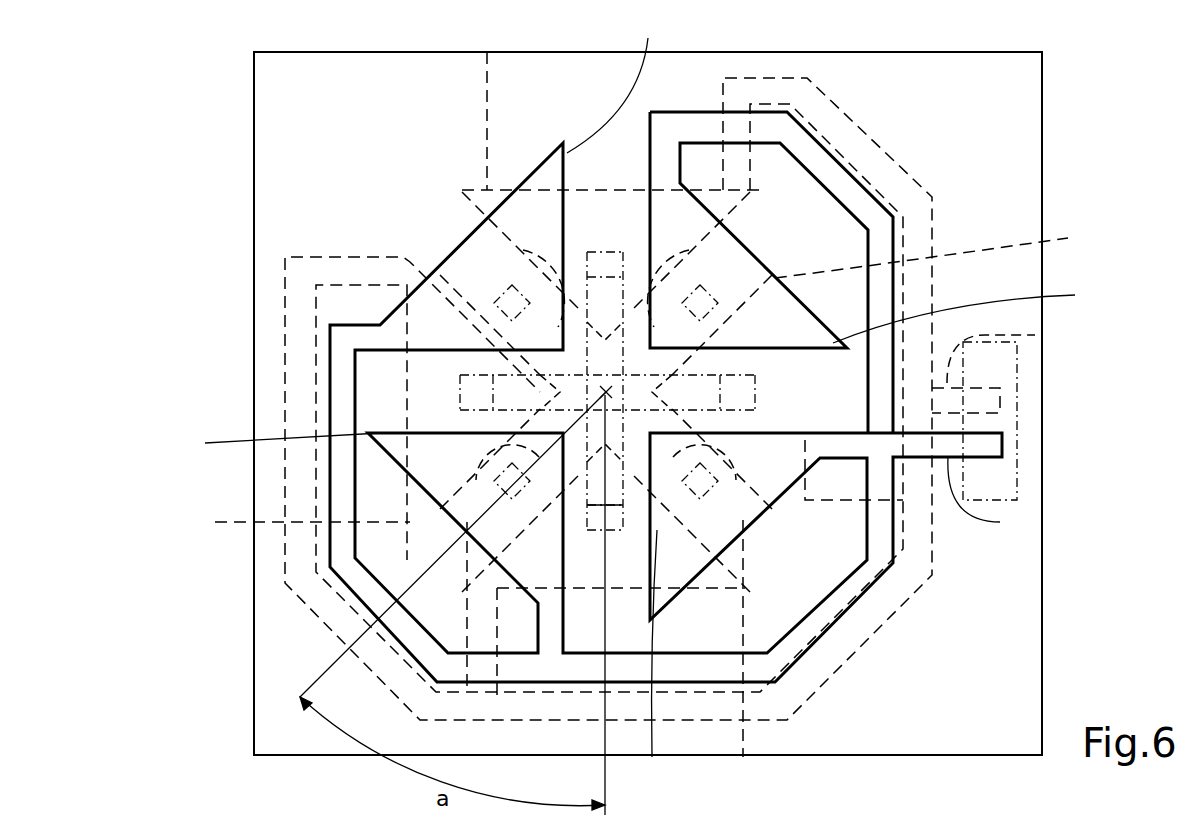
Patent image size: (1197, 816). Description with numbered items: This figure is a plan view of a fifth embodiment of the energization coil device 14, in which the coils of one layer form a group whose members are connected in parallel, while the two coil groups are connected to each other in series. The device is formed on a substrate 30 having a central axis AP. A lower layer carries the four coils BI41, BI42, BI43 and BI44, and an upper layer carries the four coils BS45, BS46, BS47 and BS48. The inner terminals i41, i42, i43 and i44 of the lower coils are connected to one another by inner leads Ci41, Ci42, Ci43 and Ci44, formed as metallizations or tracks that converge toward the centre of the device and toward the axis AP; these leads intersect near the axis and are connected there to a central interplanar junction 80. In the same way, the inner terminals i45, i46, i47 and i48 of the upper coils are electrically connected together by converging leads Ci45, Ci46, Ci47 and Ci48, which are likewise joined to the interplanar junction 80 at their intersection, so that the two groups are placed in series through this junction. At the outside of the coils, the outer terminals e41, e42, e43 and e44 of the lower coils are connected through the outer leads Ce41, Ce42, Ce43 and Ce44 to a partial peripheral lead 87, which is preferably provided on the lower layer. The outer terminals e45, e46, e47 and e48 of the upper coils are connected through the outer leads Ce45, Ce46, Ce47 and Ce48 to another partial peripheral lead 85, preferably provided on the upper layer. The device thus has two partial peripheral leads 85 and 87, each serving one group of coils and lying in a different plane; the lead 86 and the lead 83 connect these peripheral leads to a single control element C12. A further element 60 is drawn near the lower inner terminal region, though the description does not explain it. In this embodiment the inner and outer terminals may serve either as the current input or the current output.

The substrate 30 is at (428, 52).
The coil device 14 is at (586, 50).
The central interplanar junction 80 is at (608, 397).
The inner channel end 60 is at (612, 535).
The lead 86 is at (1035, 337).
The partial peripheral lead 87 is at (384, 690).
The partial peripheral lead 85 is at (596, 670).
The lead 83 is at (1000, 522).
The control element C12 is at (1003, 418).
The axis AP is at (604, 344).
The coil BI43 is at (498, 98).
The coil BI41 is at (762, 661).
The coil BI44 is at (287, 528).
The coil BI42 is at (947, 251).
The coil BS47 is at (629, 80).
The coil BS46 is at (982, 312).
The coil BS48 is at (272, 443).
The coil BS45 is at (665, 666).
The outer terminal e41 is at (462, 592).
The outer terminal e42 is at (800, 522).
The outer terminal e43 is at (752, 192).
The outer terminal e44 is at (418, 242).
The outer terminal e45 is at (838, 418).
The outer terminal e46 is at (645, 190).
The outer terminal e47 is at (398, 362).
The outer terminal e48 is at (570, 612).
The outer lead Ce41 is at (465, 593).
The outer lead Ce42 is at (822, 568).
The outer lead Ce43 is at (822, 238).
The outer lead Ce44 is at (352, 250).
The outer lead Ce45 is at (842, 458).
The outer lead Ce46 is at (665, 160).
The outer lead Ce47 is at (352, 340).
The outer lead Ce48 is at (538, 635).
The inner terminal i41 is at (612, 532).
The inner terminal i42 is at (770, 400).
The inner terminal i43 is at (600, 248).
The inner terminal i44 is at (460, 400).
The inner terminal i45 is at (722, 508).
The inner terminal i46 is at (705, 295).
The inner terminal i47 is at (490, 300).
The inner terminal i48 is at (518, 498).
The inner lead Ci41 is at (541, 559).
The inner lead Ci42 is at (781, 413).
The inner lead Ci43 is at (635, 244).
The inner lead Ci44 is at (431, 406).
The converging lead Ci45 is at (745, 448).
The converging lead Ci46 is at (741, 294).
The converging lead Ci47 is at (501, 258).
The converging lead Ci48 is at (469, 508).